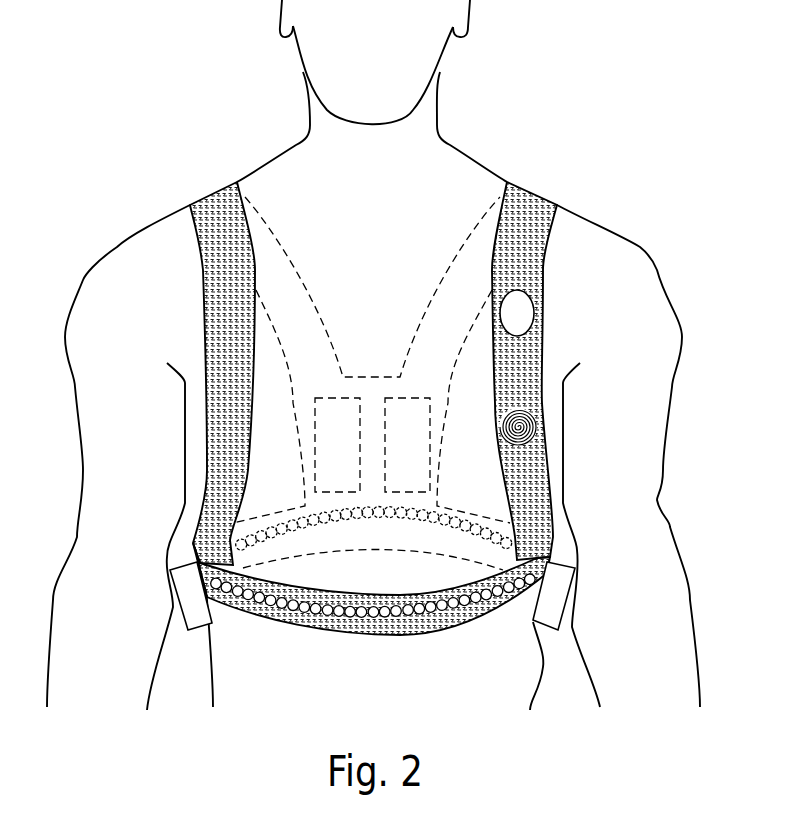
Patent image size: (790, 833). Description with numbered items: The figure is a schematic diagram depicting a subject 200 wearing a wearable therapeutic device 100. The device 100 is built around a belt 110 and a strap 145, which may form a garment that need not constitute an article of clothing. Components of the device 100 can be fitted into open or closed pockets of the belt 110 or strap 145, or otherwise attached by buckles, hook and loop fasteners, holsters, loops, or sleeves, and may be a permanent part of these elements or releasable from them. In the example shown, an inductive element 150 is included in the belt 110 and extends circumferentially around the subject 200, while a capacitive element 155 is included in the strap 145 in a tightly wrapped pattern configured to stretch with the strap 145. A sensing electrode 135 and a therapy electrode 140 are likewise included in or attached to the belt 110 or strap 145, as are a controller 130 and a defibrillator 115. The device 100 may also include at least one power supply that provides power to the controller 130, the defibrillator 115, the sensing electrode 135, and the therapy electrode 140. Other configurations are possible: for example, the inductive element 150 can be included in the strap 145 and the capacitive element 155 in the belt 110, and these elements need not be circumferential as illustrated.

The subject 200 is at (438, 118).
The wearable therapeutic device 100 is at (374, 399).
The strap 145 is at (290, 262).
The therapy electrode 140 is at (397, 403).
The sensing electrode 135 is at (517, 313).
The capacitive element 155 is at (537, 427).
The belt 110 is at (343, 623).
The inductive element 150 is at (427, 613).
The controller 130 is at (187, 583).
The defibrillator 115 is at (558, 583).